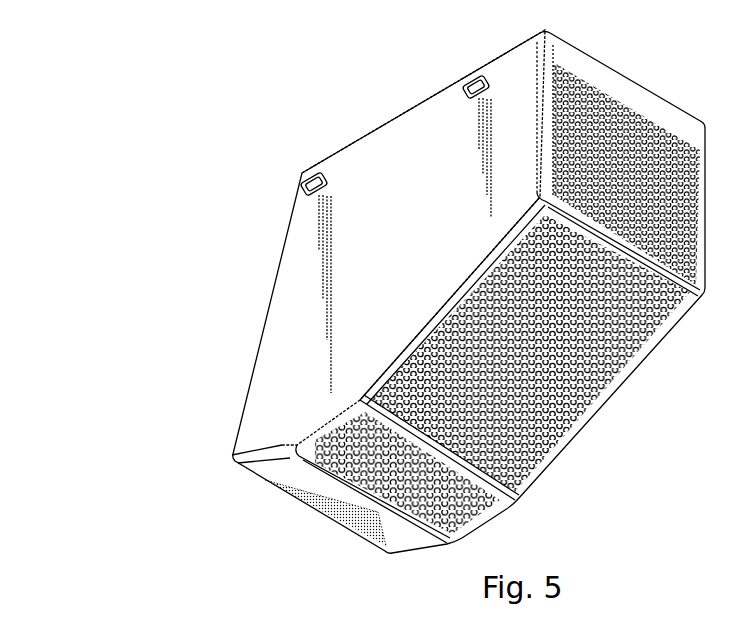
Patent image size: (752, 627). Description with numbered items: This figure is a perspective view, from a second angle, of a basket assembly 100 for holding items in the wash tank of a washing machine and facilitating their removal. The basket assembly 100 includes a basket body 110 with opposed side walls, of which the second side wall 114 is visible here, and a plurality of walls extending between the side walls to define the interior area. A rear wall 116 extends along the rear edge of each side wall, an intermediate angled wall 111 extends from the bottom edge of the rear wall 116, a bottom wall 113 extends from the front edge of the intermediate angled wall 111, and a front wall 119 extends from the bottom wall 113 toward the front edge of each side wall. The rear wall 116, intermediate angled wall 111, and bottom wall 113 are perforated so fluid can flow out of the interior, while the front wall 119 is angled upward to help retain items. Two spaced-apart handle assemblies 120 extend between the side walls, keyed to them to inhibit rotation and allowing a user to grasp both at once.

The basket assembly 100 is at (122, 143).
The basket body 110 is at (254, 337).
The intermediate angled wall 111 is at (613, 388).
The bottom wall 113 is at (493, 513).
The second side wall 114 is at (413, 213).
The rear wall 116 is at (625, 87).
The front wall 119 is at (383, 538).
The handle assembly 120 is at (305, 175).